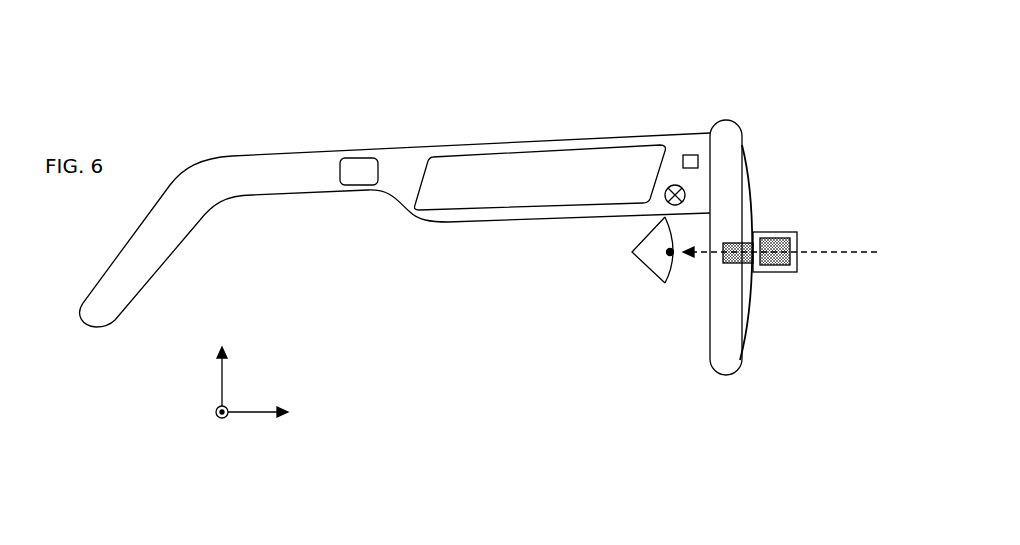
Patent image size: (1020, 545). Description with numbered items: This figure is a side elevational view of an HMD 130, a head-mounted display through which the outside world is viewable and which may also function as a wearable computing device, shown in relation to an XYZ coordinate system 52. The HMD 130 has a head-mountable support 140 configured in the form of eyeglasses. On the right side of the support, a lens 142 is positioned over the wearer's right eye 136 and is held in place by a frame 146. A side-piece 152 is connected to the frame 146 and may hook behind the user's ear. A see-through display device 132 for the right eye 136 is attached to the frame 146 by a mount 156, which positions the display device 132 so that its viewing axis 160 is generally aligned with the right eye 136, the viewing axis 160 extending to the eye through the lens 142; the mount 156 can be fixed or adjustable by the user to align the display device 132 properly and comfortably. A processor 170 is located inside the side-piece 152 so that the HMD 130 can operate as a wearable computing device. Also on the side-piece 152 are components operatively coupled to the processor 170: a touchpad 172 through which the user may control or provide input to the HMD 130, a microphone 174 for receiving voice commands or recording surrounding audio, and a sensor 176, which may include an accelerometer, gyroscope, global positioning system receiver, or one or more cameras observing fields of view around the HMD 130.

The HMD 130 is at (512, 317).
The side-piece 152 is at (252, 196).
The processor 170 is at (368, 157).
The touchpad 172 is at (468, 156).
The microphone 174 is at (673, 185).
The sensor 176 is at (692, 155).
The head-mountable support 140 is at (732, 120).
The lens 142 is at (750, 160).
The frame 146 is at (733, 375).
The mount 156 is at (750, 263).
The see-through display device 132 is at (797, 267).
The viewing axis 160 is at (857, 252).
The right eye 136 is at (665, 283).
The XYZ coordinate system 52 is at (252, 415).